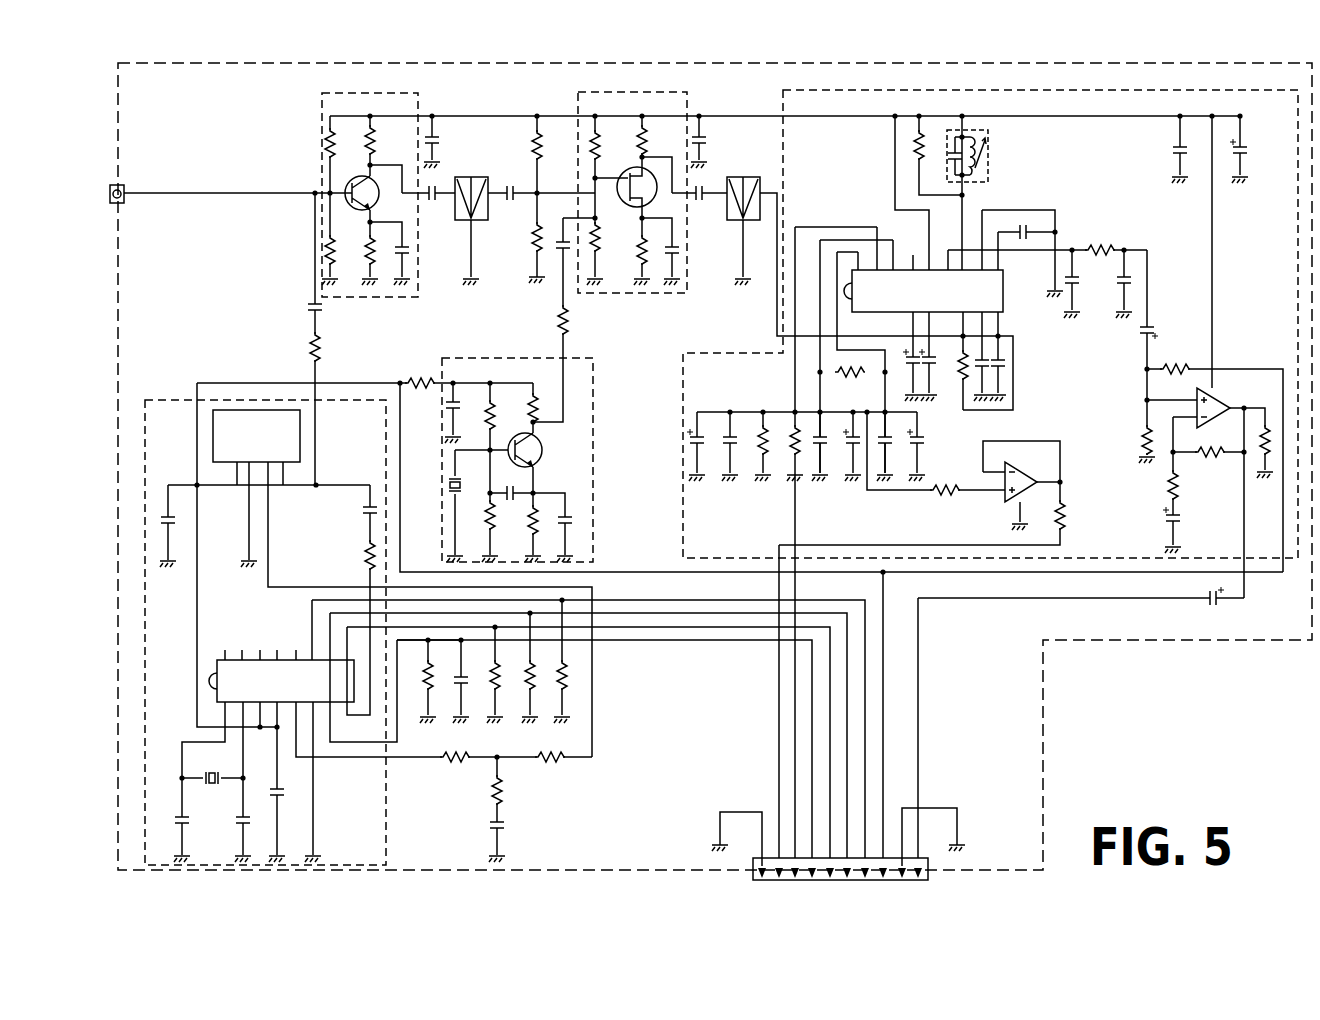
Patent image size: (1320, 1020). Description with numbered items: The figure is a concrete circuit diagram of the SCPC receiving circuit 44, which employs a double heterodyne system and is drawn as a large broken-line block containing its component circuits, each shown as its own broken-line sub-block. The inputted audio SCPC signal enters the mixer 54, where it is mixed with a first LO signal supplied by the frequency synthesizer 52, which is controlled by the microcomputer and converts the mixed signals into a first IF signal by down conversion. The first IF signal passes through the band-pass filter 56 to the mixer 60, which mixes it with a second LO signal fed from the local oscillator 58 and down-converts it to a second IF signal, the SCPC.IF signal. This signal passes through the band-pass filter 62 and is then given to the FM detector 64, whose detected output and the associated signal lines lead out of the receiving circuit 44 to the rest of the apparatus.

The SCPC receiving circuit 44 is at (1161, 648).
The frequency synthesizer 52 is at (387, 790).
The mixer 54 is at (362, 297).
The band-pass filter 56 is at (472, 177).
The local oscillator 58 is at (521, 328).
The mixer 60 is at (613, 293).
The band-pass filter 62 is at (738, 177).
The FM detector 64 is at (683, 437).